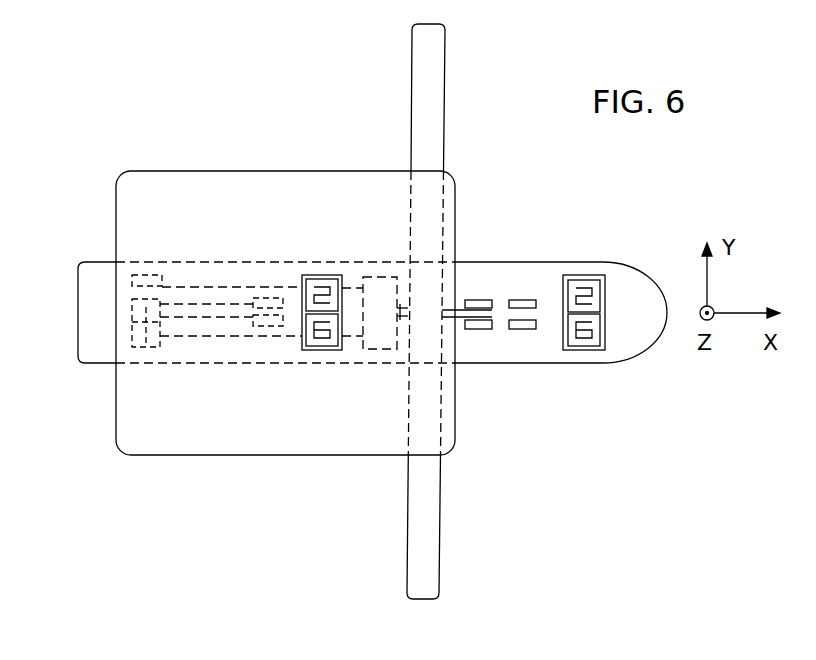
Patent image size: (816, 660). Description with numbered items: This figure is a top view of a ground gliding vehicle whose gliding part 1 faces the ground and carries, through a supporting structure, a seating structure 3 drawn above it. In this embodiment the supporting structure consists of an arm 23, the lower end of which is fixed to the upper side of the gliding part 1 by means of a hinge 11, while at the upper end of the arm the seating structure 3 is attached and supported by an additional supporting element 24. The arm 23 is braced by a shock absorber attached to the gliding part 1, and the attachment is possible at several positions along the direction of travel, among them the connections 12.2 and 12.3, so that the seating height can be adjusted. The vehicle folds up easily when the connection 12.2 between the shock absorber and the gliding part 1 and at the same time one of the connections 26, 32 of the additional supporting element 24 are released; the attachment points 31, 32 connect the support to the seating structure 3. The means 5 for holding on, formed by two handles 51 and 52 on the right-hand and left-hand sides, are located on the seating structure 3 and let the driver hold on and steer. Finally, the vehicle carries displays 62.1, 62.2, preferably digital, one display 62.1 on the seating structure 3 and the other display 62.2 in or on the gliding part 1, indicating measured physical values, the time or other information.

The gliding part 1 is at (93, 345).
The seating structure 3 is at (132, 183).
The means for holding on 5 is at (461, 311).
The hinge 11 is at (146, 280).
The connection 12.2 is at (478, 298).
The attachment position 12.3 is at (527, 298).
The arm 23 is at (263, 328).
The additional supporting element 24 is at (212, 317).
The connection 26 is at (267, 300).
The attachment point 31 is at (376, 290).
The connection 32 is at (146, 347).
The handle 51 is at (425, 544).
The handle 52 is at (430, 80).
The display 62.1 is at (323, 360).
The display 62.2 is at (554, 341).